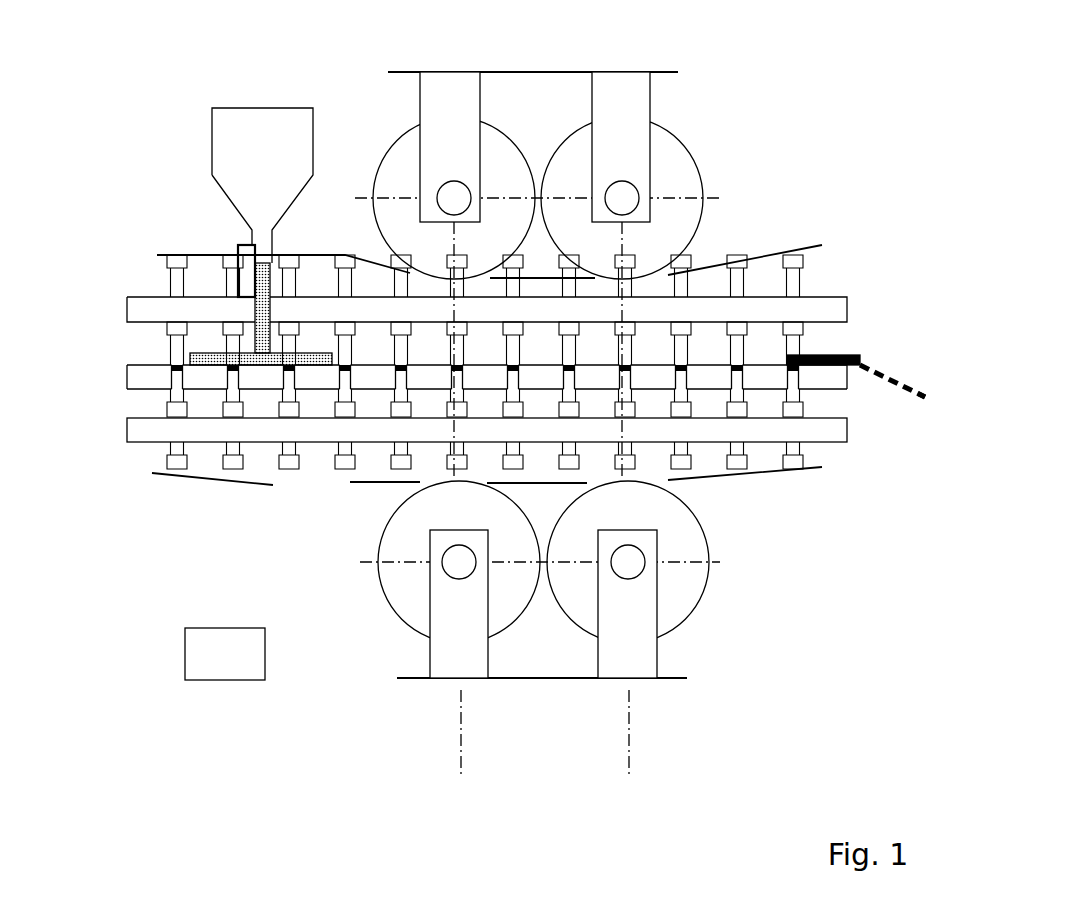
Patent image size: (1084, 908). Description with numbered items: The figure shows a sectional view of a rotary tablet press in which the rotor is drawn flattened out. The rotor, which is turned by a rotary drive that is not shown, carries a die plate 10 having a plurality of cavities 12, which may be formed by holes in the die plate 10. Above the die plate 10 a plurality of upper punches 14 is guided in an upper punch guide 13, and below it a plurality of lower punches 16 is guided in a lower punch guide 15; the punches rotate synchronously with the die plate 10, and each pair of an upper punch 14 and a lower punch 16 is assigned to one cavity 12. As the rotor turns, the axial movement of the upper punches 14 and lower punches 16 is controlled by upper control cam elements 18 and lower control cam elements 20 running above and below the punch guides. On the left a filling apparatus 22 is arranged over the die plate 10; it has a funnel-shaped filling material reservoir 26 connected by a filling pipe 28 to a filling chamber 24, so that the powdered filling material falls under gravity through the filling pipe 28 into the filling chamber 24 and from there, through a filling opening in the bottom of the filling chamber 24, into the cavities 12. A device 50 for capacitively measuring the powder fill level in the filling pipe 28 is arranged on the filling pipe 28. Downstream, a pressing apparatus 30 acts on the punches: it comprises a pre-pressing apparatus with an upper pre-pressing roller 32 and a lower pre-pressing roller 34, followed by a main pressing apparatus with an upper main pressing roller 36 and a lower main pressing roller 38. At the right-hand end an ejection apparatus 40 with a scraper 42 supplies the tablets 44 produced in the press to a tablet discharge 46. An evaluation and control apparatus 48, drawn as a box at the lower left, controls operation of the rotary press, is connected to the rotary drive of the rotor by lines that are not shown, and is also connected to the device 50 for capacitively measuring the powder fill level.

The die plate 10 is at (138, 378).
The cavities 12 is at (177, 370).
The upper punch guide 13 is at (138, 310).
The upper punches 14 is at (173, 285).
The lower punch guide 15 is at (147, 428).
The lower punches 16 is at (177, 450).
The upper control cam elements 18 is at (197, 255).
The lower control cam elements 20 is at (192, 478).
The filling apparatus 22 is at (237, 200).
The filling chamber 24 is at (192, 367).
The funnel-shaped filling material reservoir 26 is at (250, 128).
The filling pipe 28 is at (272, 243).
The pressing apparatus 30 is at (551, 405).
The upper pre-pressing roller 32 is at (400, 152).
The lower pre-pressing roller 34 is at (405, 592).
The upper main pressing roller 36 is at (687, 183).
The lower main pressing roller 38 is at (690, 580).
The ejection apparatus 40 is at (875, 369).
The scraper 42 is at (862, 357).
The tablets 44 is at (910, 380).
The tablet discharge 46 is at (925, 398).
The evaluation and control apparatus 48 is at (232, 662).
The device for capacitively measuring the powder fill level 50 is at (240, 243).